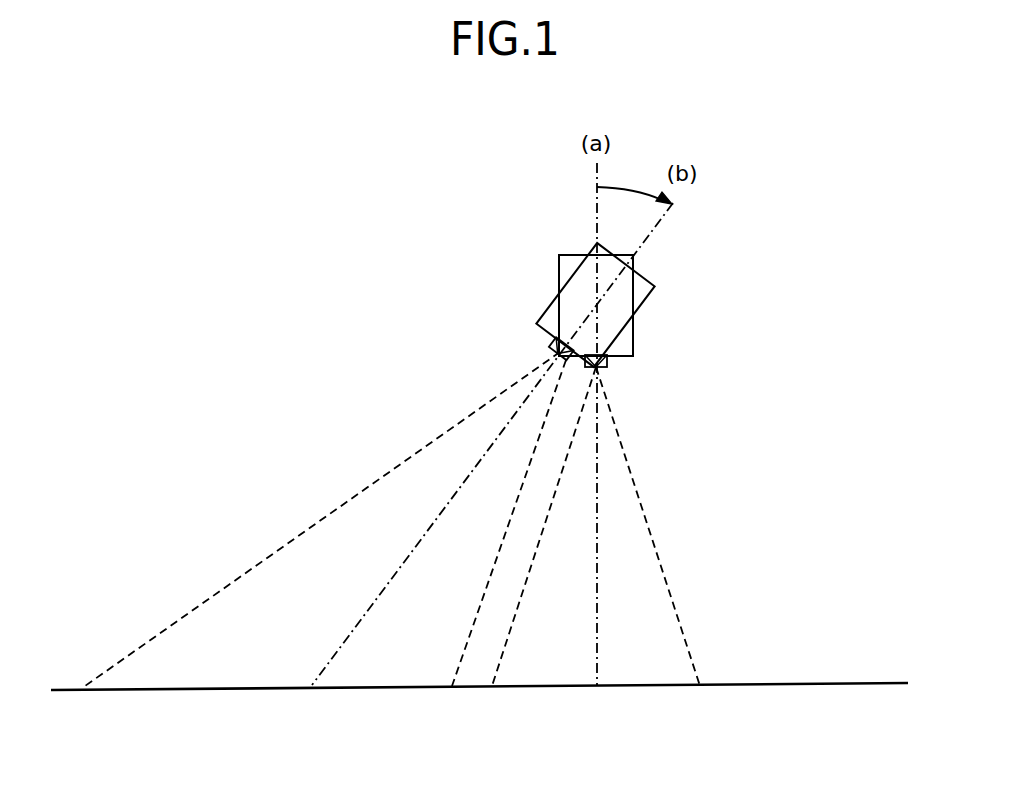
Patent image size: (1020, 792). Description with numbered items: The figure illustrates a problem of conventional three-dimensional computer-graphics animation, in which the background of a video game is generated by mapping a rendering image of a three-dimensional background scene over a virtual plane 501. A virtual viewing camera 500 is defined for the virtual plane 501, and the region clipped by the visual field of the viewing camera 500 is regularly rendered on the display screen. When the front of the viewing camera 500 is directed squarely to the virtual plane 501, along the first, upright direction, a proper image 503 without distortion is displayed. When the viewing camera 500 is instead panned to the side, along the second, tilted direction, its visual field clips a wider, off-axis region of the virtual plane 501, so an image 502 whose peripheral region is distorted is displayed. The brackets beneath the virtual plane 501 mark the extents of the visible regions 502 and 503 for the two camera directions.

The virtual viewing camera 500 is at (633, 331).
The virtual plane 501 is at (790, 683).
The visible region (distorted image) 502 is at (82, 692).
The visible region (proper image) 503 is at (707, 693).